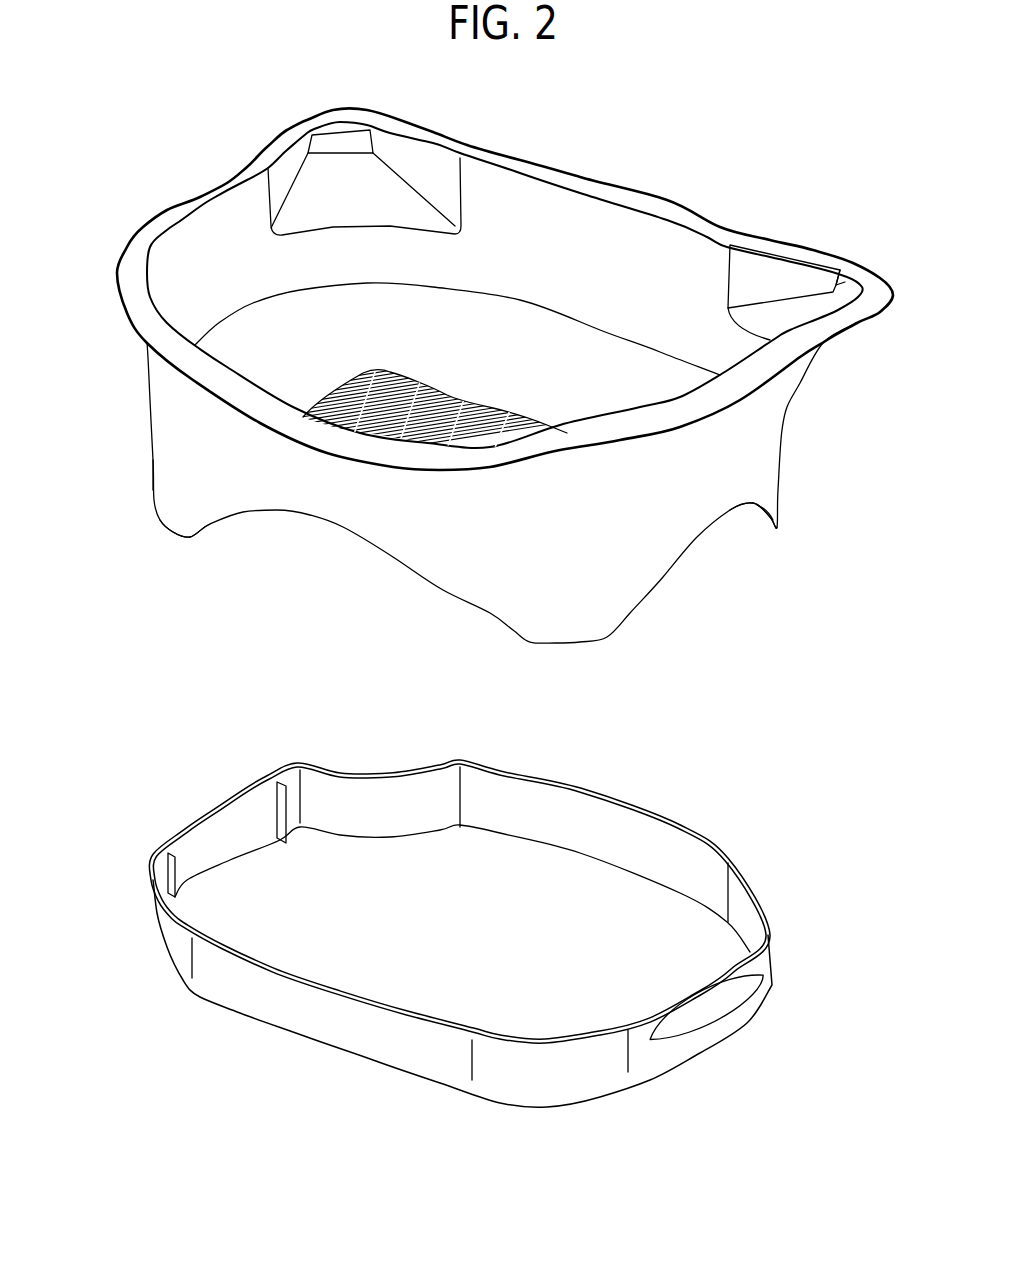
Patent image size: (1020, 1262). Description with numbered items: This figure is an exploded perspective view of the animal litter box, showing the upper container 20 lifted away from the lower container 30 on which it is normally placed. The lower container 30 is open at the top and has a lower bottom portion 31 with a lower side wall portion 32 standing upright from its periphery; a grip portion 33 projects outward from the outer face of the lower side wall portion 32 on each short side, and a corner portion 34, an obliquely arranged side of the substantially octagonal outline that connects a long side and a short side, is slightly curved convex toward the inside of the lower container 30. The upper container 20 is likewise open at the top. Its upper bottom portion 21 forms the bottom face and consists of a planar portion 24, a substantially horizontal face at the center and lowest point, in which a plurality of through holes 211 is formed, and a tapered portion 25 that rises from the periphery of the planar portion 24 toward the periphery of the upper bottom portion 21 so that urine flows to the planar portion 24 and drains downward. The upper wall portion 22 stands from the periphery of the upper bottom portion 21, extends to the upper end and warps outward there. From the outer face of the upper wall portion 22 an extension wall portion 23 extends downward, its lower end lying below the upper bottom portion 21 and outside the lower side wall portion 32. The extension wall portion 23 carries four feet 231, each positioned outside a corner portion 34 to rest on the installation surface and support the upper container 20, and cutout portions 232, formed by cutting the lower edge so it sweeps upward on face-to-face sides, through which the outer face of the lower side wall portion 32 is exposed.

The upper container 20 is at (660, 205).
The upper bottom portion 21 is at (268, 328).
The through hole 211 is at (461, 418).
The upper wall portion 22 is at (190, 263).
The extension wall portion 23 is at (157, 418).
The foot 231 is at (160, 493).
The cutout portion 232 is at (340, 526).
The planar portion 24 is at (517, 387).
The tapered portion 25 is at (626, 362).
The lower container 30 is at (487, 917).
The lower bottom portion 31 is at (508, 870).
The lower side wall portion 32 is at (575, 805).
The grip portion 33 is at (757, 1010).
The corner portion 34 is at (753, 900).